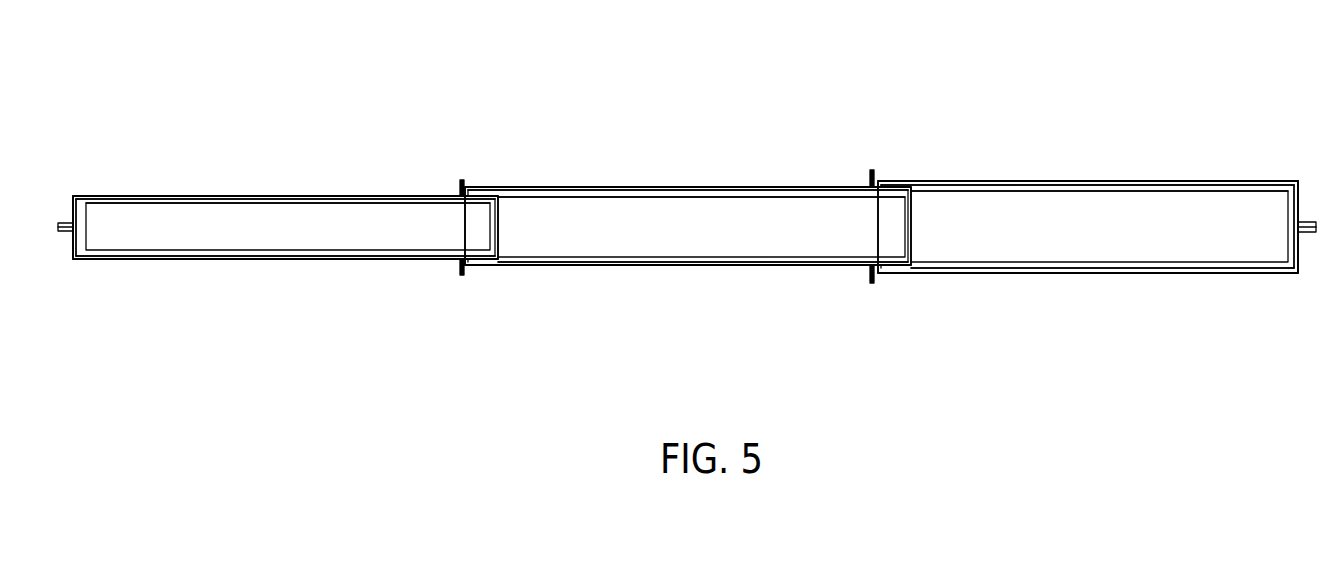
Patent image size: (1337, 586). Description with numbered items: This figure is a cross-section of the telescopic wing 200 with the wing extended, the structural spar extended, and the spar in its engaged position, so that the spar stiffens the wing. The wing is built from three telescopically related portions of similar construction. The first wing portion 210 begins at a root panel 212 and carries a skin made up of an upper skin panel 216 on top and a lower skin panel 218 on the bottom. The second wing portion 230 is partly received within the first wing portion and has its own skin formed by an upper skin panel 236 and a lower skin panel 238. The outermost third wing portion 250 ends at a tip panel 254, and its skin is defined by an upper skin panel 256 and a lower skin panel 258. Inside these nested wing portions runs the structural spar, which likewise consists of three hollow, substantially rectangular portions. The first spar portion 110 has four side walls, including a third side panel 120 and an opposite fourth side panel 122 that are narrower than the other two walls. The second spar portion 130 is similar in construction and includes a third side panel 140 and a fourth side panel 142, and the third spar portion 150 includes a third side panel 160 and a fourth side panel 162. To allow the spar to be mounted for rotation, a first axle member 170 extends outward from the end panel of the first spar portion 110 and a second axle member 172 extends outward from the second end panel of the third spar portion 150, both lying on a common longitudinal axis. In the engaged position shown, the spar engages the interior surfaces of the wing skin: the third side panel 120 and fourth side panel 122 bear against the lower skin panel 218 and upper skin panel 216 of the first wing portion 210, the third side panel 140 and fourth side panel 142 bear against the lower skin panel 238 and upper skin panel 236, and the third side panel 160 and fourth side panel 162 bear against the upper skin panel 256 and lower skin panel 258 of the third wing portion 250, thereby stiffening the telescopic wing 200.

The telescopic wing 200 is at (218, 62).
The first spar portion 110 is at (1230, 176).
The third side panel 120 is at (1190, 262).
The fourth side panel 122 is at (1090, 191).
The second spar portion 130 is at (822, 185).
The third side panel 140 is at (745, 257).
The fourth side panel 142 is at (632, 198).
The third spar portion 150 is at (412, 193).
The third side panel 160 is at (372, 250).
The fourth side panel 162 is at (258, 204).
The first axle member 170 is at (1312, 232).
The second axle member 172 is at (60, 232).
The first wing portion 210 is at (1140, 180).
The root panel 212 is at (1300, 181).
The upper skin panel 216 is at (985, 182).
The lower skin panel 218 is at (1050, 274).
The second wing portion 230 is at (733, 189).
The upper skin panel 236 is at (528, 188).
The lower skin panel 238 is at (590, 266).
The third wing portion 250 is at (322, 195).
The tip panel 254 is at (73, 195).
The upper skin panel 256 is at (150, 196).
The lower skin panel 258 is at (216, 260).